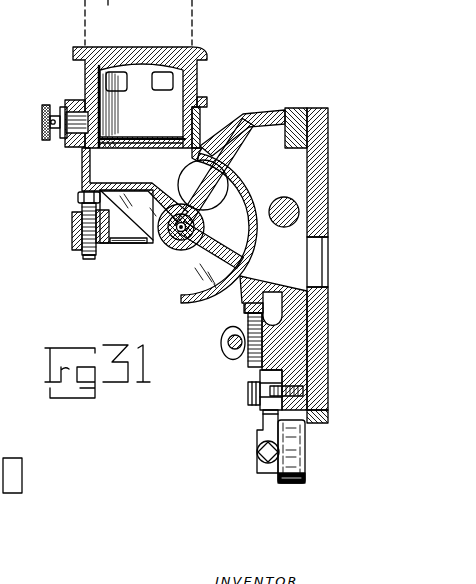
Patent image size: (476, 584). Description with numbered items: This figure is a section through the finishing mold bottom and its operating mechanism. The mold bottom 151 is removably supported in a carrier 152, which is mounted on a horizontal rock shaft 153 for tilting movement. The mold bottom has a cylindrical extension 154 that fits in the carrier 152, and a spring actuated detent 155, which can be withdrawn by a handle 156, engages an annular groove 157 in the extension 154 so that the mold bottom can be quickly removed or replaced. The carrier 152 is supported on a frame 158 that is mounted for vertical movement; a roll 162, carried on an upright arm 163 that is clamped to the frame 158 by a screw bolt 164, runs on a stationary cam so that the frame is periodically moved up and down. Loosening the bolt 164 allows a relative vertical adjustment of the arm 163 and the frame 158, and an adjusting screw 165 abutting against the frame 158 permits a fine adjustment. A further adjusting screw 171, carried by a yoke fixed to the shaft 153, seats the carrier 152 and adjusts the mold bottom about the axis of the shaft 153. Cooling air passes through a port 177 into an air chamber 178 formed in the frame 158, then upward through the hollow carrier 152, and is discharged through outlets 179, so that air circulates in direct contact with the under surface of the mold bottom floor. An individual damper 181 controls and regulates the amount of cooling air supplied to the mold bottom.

The mold bottom 151 is at (207, 47).
The carrier 152 is at (83, 170).
The rock shaft 153 is at (170, 244).
The cylindrical extension 154 is at (198, 98).
The spring actuated detent 155 is at (79, 102).
The handle 156 is at (42, 125).
The annular groove 157 is at (199, 119).
The frame 158 is at (242, 295).
The roll 162 is at (305, 479).
The upright arm 163 is at (262, 377).
The screw bolt 164 is at (250, 403).
The adjusting screw 165 is at (245, 318).
The adjusting screw 171 is at (78, 199).
The port 177 is at (321, 256).
The air chamber 178 is at (292, 172).
The outlets 179 is at (167, 81).
The damper 181 is at (203, 211).